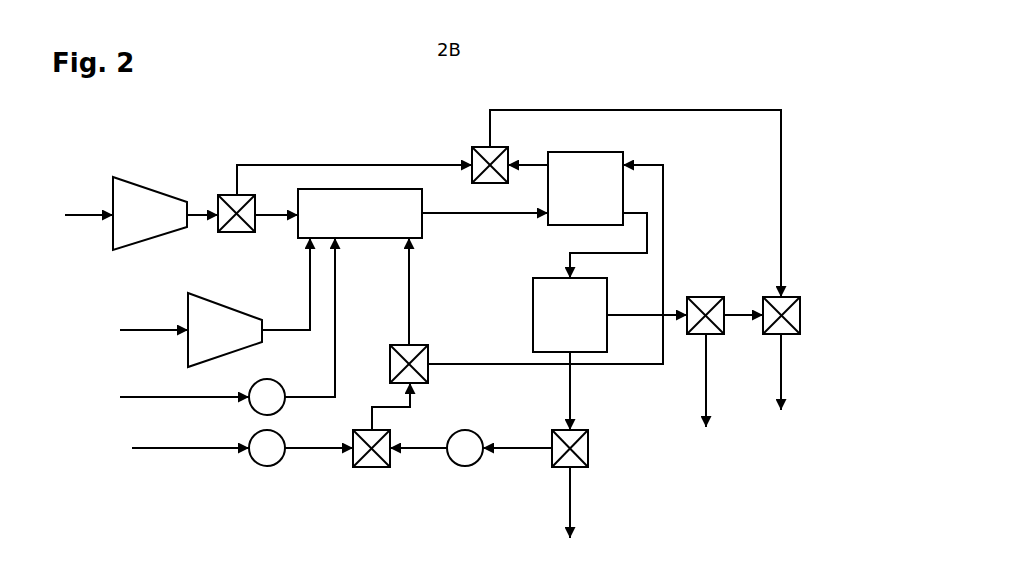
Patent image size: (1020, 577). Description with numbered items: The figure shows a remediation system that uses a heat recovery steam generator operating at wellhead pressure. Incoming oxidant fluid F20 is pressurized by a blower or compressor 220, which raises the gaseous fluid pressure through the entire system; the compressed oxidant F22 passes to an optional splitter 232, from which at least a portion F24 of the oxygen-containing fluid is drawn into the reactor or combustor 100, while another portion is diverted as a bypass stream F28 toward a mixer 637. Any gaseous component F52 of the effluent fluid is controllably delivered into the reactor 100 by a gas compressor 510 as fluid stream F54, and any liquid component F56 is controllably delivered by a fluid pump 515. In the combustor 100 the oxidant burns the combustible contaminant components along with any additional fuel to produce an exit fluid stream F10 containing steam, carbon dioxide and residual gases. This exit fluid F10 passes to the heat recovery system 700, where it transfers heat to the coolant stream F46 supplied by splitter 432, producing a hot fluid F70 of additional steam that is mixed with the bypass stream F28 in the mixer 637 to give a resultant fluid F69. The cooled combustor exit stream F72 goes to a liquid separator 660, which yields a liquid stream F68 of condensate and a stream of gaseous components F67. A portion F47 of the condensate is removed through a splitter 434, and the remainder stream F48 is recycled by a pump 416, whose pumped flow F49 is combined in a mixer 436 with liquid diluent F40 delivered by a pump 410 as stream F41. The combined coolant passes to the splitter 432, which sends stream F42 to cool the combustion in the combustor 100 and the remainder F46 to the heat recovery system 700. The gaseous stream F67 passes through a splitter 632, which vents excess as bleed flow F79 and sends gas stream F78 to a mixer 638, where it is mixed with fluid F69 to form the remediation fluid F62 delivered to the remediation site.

The compressor 220 is at (136, 224).
The oxidant fluid F20 is at (94, 213).
The compressed feed stream F22 is at (204, 221).
The splitter 232 is at (236, 233).
The oxygen-containing fluid stream F24 is at (274, 212).
The bypass stream F28 is at (334, 163).
The reactor 100 is at (346, 224).
The exit fluid stream F10 is at (465, 213).
The mixer 637 is at (473, 150).
The hot fluid F70 is at (522, 162).
The resultant fluid F69 is at (634, 108).
The heat recovery system 700 is at (571, 199).
The coolant stream F46 is at (500, 363).
The cooled combustor exit stream F72 is at (610, 254).
The liquid separator 660 is at (556, 325).
The gaseous stream F67 is at (645, 318).
The splitter 632 is at (697, 297).
The gas stream F78 is at (742, 313).
The mixer 638 is at (799, 297).
The remediation fluid F62 is at (782, 372).
The bleed flow F79 is at (707, 395).
The liquid stream F68 is at (571, 395).
The splitter 434 is at (589, 446).
The condensate portion F47 is at (571, 499).
The remainder stream F48 is at (527, 453).
The pump 416 is at (477, 431).
The pumped liquid stream F49 is at (418, 452).
The mixer 436 is at (353, 432).
The splitter 432 is at (428, 381).
The coolant stream F42 is at (408, 287).
The pump 410 is at (266, 467).
The liquid diluent F40 is at (180, 452).
The pumped feed stream F41 is at (321, 455).
The fluid pump 515 is at (262, 380).
The liquid component F56 is at (172, 396).
The fluid stream F54 is at (309, 295).
The gas compressor 510 is at (211, 341).
The gaseous component F52 is at (154, 329).